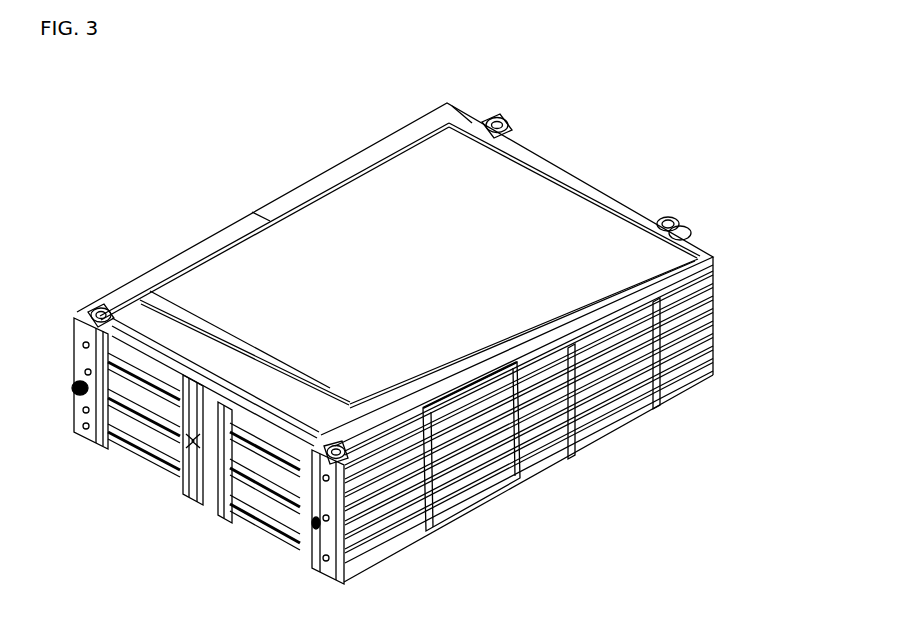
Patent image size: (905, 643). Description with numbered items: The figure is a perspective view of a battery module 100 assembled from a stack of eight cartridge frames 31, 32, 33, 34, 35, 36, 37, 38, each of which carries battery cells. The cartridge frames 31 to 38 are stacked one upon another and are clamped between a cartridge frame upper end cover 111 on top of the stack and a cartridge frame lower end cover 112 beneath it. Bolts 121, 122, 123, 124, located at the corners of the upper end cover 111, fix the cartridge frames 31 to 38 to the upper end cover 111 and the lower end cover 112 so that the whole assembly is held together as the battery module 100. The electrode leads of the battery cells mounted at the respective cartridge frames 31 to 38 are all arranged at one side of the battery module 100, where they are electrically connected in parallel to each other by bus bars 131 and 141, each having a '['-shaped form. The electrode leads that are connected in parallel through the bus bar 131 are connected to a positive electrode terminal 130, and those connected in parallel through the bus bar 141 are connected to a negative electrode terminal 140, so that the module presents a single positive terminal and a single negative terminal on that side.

The battery module 100 is at (103, 118).
The cartridge frame upper end cover 111 is at (690, 262).
The cartridge frame lower end cover 112 is at (697, 372).
The bolt 121 is at (101, 306).
The bolt 122 is at (338, 440).
The bolt 123 is at (673, 220).
The bolt 124 is at (496, 120).
The positive electrode terminal 130 is at (68, 392).
The bus bar 131 is at (130, 367).
The negative electrode terminal 140 is at (306, 534).
The bus bar 141 is at (257, 440).
The cartridge frame 31 is at (713, 358).
The cartridge frame 32 is at (713, 346).
The cartridge frame 33 is at (713, 334).
The cartridge frame 34 is at (713, 321).
The cartridge frame 35 is at (713, 308).
The cartridge frame 36 is at (713, 296).
The cartridge frame 37 is at (713, 284).
The cartridge frame 38 is at (713, 271).